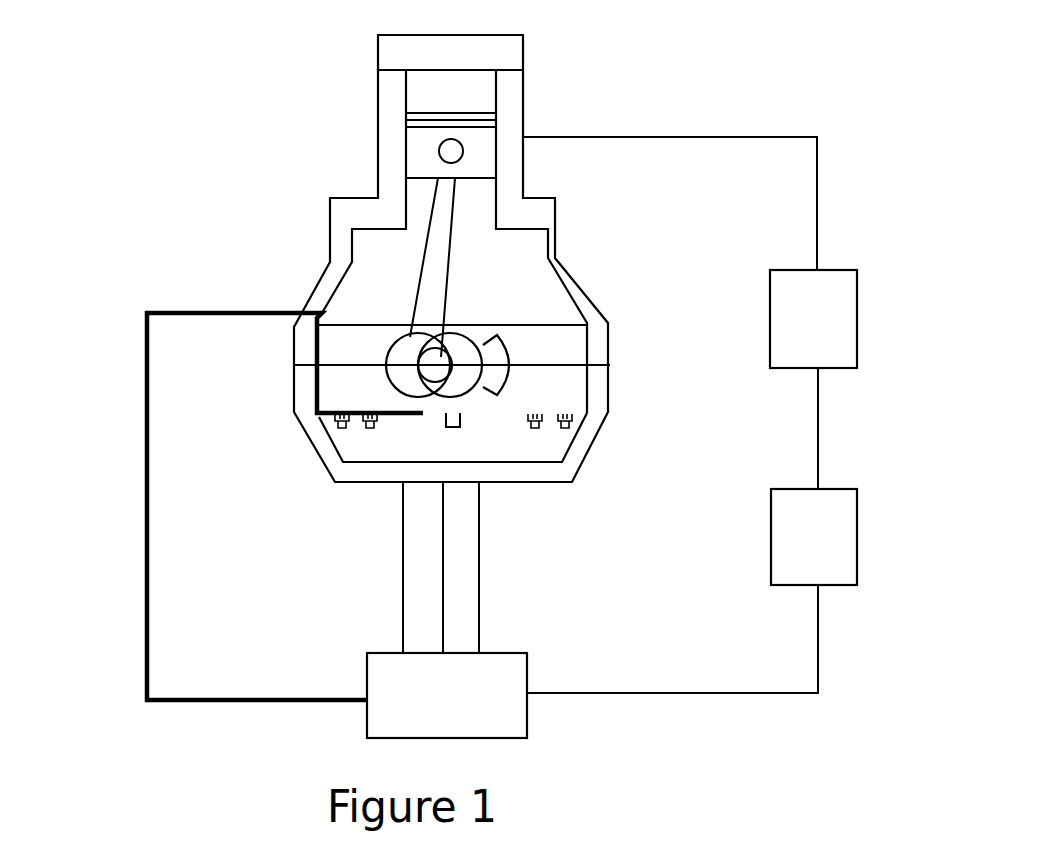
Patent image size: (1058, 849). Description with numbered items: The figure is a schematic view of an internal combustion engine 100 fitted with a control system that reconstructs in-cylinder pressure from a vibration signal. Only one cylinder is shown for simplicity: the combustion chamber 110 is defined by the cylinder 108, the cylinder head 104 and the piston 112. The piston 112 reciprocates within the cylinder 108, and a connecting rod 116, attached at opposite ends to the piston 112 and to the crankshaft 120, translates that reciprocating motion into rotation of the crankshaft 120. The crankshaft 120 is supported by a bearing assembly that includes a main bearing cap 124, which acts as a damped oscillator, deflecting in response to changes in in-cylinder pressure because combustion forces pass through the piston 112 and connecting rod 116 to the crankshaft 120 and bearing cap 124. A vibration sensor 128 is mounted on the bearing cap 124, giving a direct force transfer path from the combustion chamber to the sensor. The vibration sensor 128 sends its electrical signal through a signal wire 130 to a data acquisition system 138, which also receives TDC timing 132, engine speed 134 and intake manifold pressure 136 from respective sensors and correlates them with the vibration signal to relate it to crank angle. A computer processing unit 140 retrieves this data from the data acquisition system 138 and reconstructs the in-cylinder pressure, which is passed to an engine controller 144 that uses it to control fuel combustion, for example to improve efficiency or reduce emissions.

The internal combustion engine 100 is at (626, 74).
The cylinder head 104 is at (393, 57).
The cylinder 108 is at (389, 115).
The combustion chamber 110 is at (469, 106).
The piston 112 is at (418, 142).
The connecting rod 116 is at (428, 278).
The crankshaft 120 is at (436, 347).
The main bearing cap 124 is at (423, 405).
The vibration sensor 128 is at (457, 427).
The signal wire 130 is at (145, 397).
The TDC timing 132 is at (403, 597).
The engine speed 134 is at (443, 535).
The intake manifold pressure 136 is at (479, 598).
The data acquisition system 138 is at (447, 695).
The computer processing unit 140 is at (814, 537).
The engine controller 144 is at (813, 319).